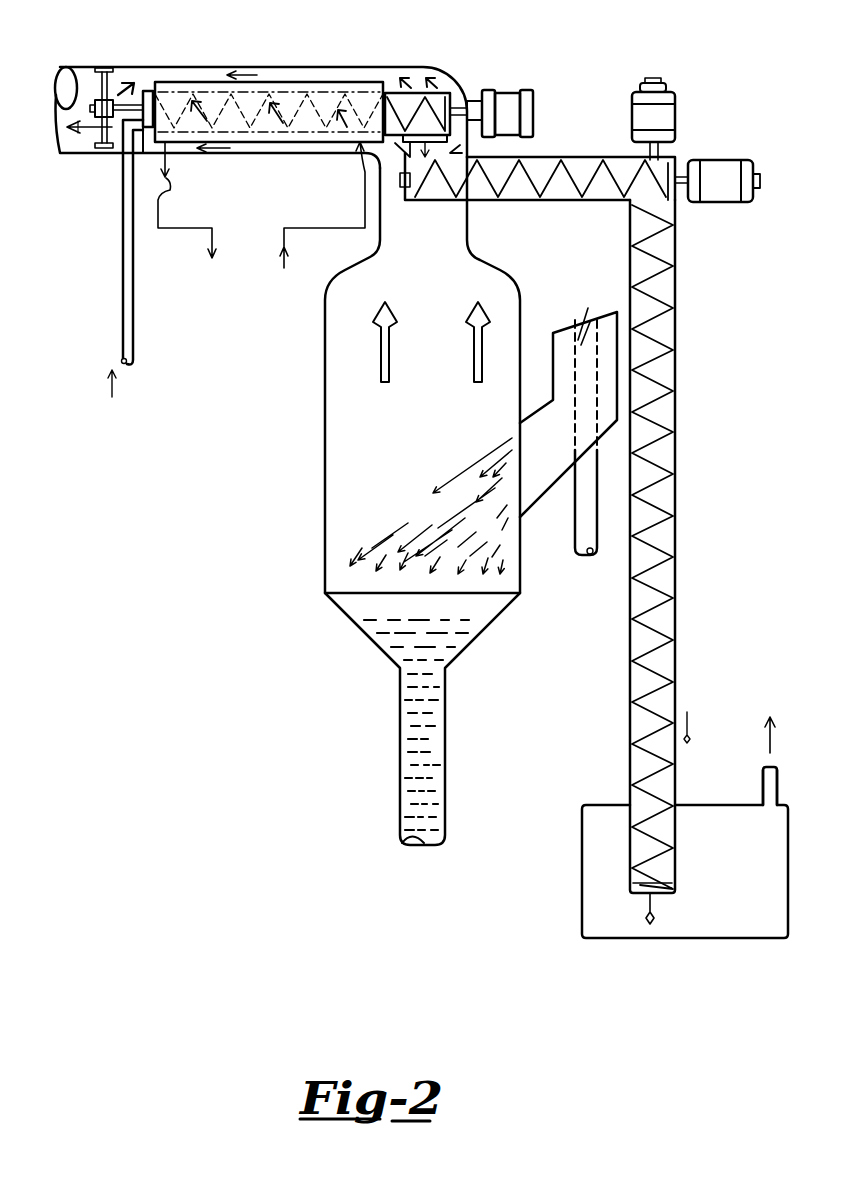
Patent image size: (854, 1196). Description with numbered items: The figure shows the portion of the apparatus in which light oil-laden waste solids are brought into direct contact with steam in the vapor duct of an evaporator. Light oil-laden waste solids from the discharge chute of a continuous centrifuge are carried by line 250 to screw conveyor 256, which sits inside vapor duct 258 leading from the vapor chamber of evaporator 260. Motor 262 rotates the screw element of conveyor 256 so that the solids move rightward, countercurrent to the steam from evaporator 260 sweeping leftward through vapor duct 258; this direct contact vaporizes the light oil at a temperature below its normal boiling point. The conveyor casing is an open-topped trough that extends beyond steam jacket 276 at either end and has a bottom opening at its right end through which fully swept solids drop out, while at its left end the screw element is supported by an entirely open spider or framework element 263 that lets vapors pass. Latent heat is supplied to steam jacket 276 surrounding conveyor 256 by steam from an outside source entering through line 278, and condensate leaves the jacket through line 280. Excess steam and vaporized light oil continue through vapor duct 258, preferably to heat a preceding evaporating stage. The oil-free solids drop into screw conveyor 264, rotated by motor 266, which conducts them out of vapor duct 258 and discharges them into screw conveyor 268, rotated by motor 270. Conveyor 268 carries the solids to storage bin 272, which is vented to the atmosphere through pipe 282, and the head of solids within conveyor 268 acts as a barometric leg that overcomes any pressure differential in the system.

The line 250 is at (134, 283).
The screw conveyor 256 is at (178, 90).
The vapor duct 258 is at (290, 156).
The evaporator 260 is at (325, 495).
The motor 262 is at (530, 90).
The spider or framework element 263 is at (57, 142).
The screw conveyor 264 is at (547, 157).
The motor 266 is at (725, 160).
The screw conveyor 268 is at (676, 460).
The motor 270 is at (675, 113).
The storage bin 272 is at (788, 840).
The steam jacket 276 is at (294, 82).
The line 278 is at (355, 172).
The line 280 is at (172, 172).
The pipe 282 is at (777, 778).